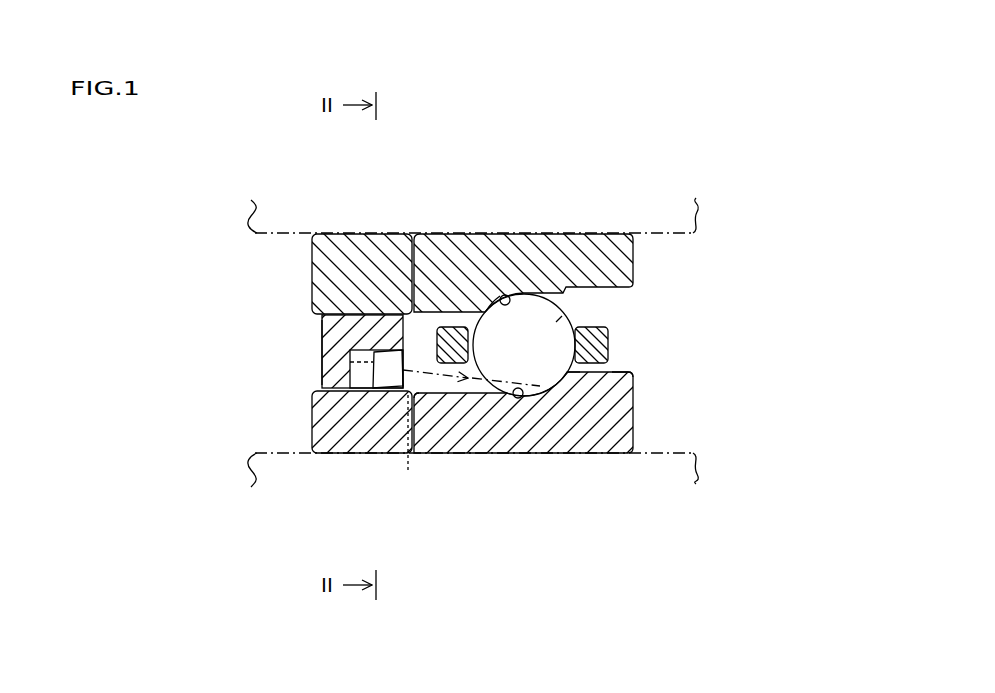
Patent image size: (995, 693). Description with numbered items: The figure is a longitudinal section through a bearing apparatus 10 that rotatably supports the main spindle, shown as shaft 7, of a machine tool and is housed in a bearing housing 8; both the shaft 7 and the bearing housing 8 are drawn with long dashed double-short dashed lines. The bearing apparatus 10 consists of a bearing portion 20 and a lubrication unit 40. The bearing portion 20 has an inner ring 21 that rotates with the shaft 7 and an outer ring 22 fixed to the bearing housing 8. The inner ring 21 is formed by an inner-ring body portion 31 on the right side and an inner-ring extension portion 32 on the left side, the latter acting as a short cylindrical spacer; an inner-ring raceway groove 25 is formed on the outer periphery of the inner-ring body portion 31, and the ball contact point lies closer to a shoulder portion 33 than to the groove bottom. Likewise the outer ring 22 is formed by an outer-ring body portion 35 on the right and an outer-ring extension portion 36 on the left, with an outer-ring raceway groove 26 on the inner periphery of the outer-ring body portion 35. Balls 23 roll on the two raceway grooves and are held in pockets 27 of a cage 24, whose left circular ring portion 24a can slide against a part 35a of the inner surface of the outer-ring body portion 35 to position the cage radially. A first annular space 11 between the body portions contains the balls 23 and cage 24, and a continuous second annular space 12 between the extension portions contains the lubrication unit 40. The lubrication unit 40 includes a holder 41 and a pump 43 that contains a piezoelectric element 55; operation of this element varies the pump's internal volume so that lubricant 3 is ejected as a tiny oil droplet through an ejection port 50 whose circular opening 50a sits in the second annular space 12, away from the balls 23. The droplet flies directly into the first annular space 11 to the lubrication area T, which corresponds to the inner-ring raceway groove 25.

The bearing housing 8 is at (270, 233).
The shaft 7 is at (270, 453).
The bearing apparatus 10 is at (475, 281).
The bearing portion 20 is at (475, 408).
The outer ring 22 is at (475, 281).
The inner ring 21 is at (475, 408).
The outer-ring extension portion 36 is at (373, 245).
The outer-ring body portion 35 is at (388, 133).
The part of the inner peripheral surface 35a is at (482, 300).
The inner-ring extension portion 32 is at (375, 447).
The inner-ring body portion 31 is at (388, 556).
The ball 23 is at (568, 318).
The cage 24 is at (609, 348).
The circular ring portion 24a is at (447, 326).
The outer-ring raceway groove 26 is at (505, 295).
The inner-ring raceway groove 25 is at (517, 396).
The pocket 27 is at (579, 373).
The shoulder portion 33 is at (618, 371).
The holder 41 is at (475, 360).
The lubrication unit 40 is at (322, 370).
The pump 43 is at (324, 392).
The piezoelectric element 55 is at (350, 390).
The ejection port 50 is at (407, 446).
The opening 50a is at (405, 372).
The first annular space 11 is at (423, 332).
The second annular space 12 is at (320, 336).
The lubricant 3 is at (322, 351).
The lubrication area T is at (548, 386).